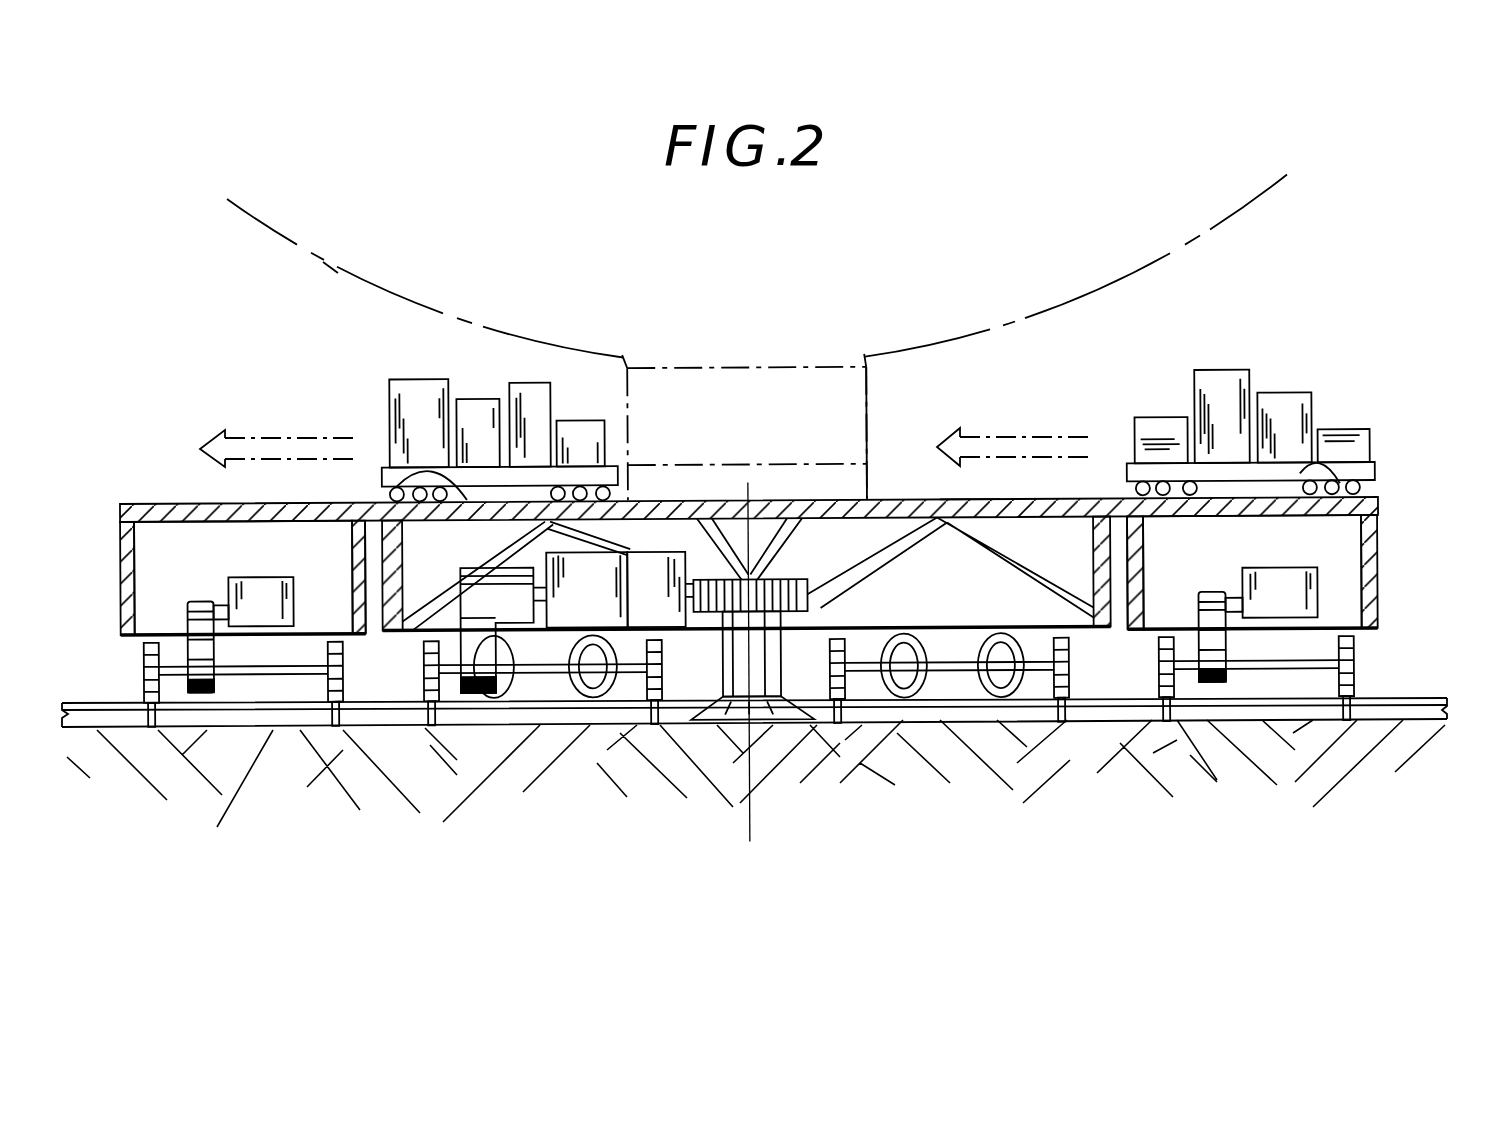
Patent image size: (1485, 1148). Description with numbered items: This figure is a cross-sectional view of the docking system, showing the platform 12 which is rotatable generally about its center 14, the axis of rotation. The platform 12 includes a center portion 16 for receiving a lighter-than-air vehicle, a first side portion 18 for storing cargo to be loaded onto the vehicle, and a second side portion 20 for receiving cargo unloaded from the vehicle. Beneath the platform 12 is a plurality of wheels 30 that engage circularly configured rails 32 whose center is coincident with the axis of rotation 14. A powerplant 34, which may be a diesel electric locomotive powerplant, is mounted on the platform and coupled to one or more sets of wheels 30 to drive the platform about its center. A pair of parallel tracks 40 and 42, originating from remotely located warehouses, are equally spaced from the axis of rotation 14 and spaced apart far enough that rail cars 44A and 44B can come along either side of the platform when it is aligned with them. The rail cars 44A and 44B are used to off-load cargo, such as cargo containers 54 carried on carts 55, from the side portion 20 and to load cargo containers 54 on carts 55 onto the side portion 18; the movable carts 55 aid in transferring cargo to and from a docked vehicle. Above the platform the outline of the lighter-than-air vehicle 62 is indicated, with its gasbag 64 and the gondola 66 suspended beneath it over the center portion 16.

The platform 12 is at (1082, 493).
The center (axis of rotation) 14 is at (745, 815).
The center portion 16 is at (717, 497).
The first side portion 18 is at (965, 493).
The second side portion 20 is at (382, 474).
The wheels 30 is at (422, 690).
The circularly configured rails 32 is at (654, 710).
The powerplant 34 is at (606, 614).
The track 40 is at (340, 712).
The track 42 is at (1348, 712).
The rail car 44A is at (172, 490).
The rail car 44B is at (1378, 492).
The cargo containers 54 is at (438, 382).
The carts 55 is at (473, 473).
The lighter-than-air vehicle 62 is at (1255, 215).
The gasbag 64 is at (332, 267).
The gondola 66 is at (868, 402).